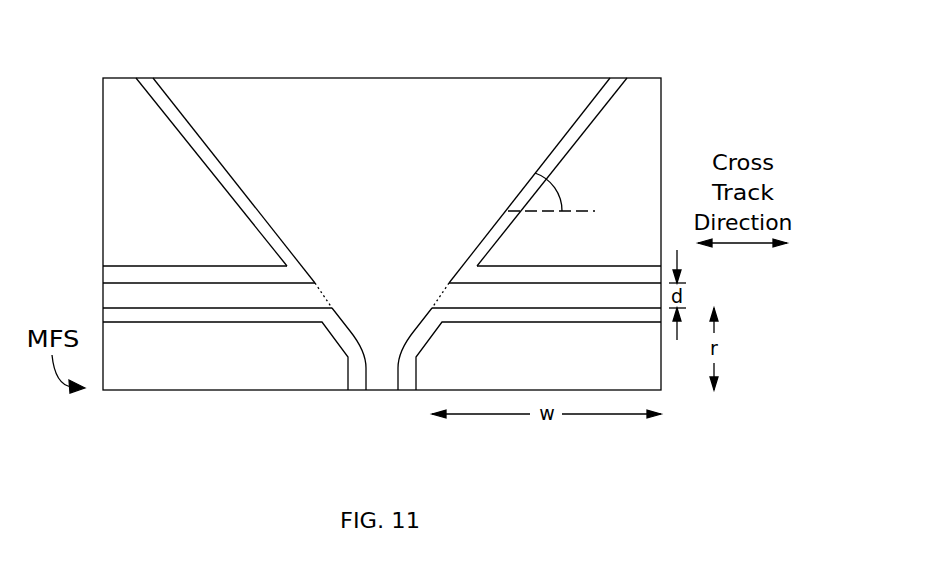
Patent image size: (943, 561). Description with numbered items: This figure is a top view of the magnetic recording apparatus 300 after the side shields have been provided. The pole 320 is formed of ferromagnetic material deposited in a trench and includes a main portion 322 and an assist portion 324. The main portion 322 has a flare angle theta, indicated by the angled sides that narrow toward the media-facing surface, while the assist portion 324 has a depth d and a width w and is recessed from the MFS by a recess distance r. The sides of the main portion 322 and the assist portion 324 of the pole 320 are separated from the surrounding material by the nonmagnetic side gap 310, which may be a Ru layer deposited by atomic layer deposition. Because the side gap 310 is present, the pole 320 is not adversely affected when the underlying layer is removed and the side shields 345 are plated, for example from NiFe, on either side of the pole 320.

The magnetic recording apparatus 300 is at (362, 23).
The side gap 310 is at (147, 78).
The pole 320 is at (196, 176).
The main portion 322 is at (461, 201).
The assist portion 324 is at (382, 287).
The side shields 345 is at (382, 356).